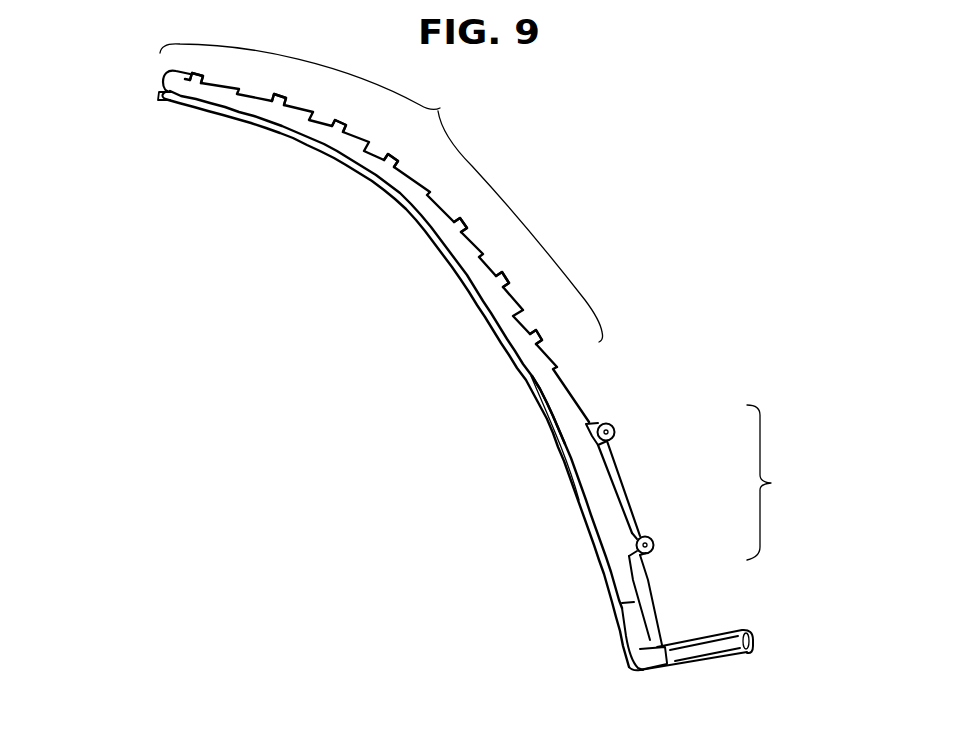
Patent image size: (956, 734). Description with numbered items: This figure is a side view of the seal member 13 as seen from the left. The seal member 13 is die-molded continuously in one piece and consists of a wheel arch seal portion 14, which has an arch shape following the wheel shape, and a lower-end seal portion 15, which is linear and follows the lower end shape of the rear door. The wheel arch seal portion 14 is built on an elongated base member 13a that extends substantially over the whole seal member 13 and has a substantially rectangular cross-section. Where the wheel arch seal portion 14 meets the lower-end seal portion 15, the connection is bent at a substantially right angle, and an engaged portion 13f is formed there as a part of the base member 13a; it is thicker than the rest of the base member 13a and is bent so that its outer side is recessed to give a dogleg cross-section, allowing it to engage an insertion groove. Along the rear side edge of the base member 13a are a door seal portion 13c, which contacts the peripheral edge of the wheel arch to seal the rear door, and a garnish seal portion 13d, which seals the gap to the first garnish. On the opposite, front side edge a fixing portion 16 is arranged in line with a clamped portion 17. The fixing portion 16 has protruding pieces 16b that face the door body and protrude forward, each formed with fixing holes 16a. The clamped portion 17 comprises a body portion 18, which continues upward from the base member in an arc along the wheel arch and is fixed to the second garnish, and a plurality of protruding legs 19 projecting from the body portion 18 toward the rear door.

The seal member 13 is at (489, 351).
The base member 13a is at (520, 353).
The door seal portion 13c is at (157, 96).
The garnish seal portion 13d is at (183, 98).
The engaged portion 13f is at (630, 637).
The wheel arch seal portion 14 is at (552, 405).
The lower-end seal portion 15 is at (713, 681).
The fixing portion 16 is at (718, 525).
The fixing holes 16a is at (600, 447).
The protruding pieces 16b is at (613, 428).
The clamped portion 17 is at (381, 193).
The body portion 18 is at (414, 203).
The protruding legs 19 is at (197, 74).